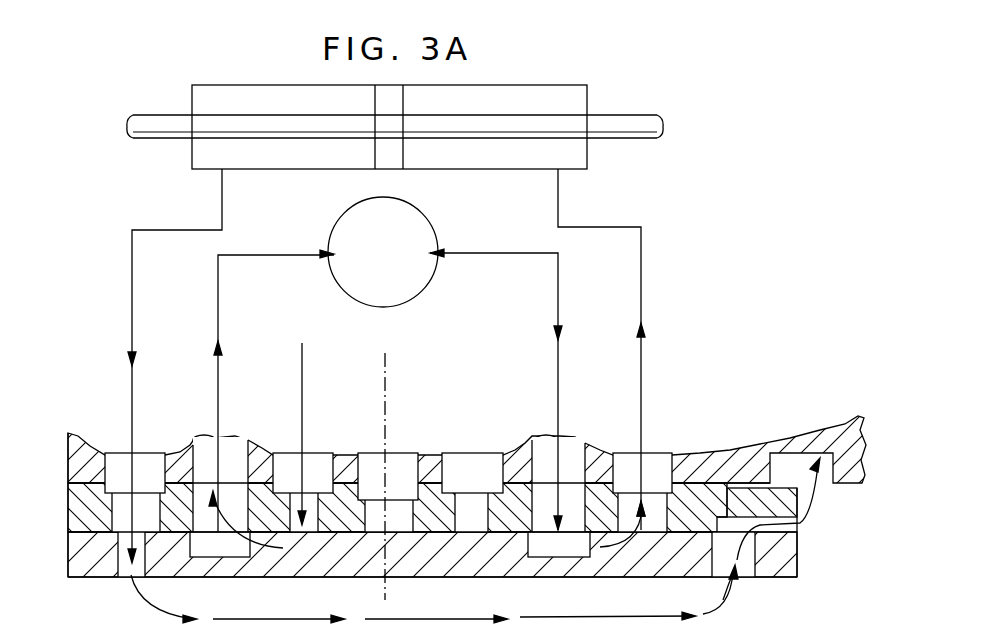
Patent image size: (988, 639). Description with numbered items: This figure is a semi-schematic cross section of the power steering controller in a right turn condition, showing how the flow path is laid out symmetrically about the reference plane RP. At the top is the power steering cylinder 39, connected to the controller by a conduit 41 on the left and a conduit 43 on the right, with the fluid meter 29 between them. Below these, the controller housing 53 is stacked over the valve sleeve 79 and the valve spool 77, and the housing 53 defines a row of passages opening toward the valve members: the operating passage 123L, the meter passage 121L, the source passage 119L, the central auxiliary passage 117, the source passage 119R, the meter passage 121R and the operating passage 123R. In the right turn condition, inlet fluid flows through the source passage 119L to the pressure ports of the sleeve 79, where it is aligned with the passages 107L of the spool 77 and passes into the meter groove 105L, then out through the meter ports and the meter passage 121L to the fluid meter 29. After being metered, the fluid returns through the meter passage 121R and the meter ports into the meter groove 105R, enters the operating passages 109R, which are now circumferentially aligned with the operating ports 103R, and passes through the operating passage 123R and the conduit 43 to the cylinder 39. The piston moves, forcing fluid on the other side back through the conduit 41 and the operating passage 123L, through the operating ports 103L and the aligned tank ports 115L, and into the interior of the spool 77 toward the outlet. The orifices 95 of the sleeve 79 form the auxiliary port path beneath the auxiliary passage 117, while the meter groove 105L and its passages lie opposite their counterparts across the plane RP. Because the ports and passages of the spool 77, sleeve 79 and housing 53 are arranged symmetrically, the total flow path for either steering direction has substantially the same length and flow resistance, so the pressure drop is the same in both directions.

The power steering cylinder 39 is at (192, 105).
The conduit 41 is at (190, 228).
The conduit 43 is at (588, 226).
The fluid meter 29 is at (440, 240).
The controller housing 53 is at (68, 460).
The valve sleeve 79 is at (68, 512).
The valve spool 77 is at (68, 555).
The operating ports 103L is at (120, 522).
The operating ports 103R is at (655, 509).
The meter groove 105L is at (186, 632).
The meter groove 105R is at (533, 545).
The passages 107L is at (278, 547).
The operating passages 109R is at (620, 548).
The tank ports 115L is at (140, 565).
The auxiliary passage 117 is at (398, 468).
The source passage 119L is at (302, 460).
The source passage 119R is at (462, 465).
The meter passage 121L is at (238, 445).
The meter passage 121R is at (567, 445).
The operating passage 123L is at (152, 456).
The operating passage 123R is at (652, 465).
The orifices 95 is at (420, 632).
The reference plane RP is at (388, 388).